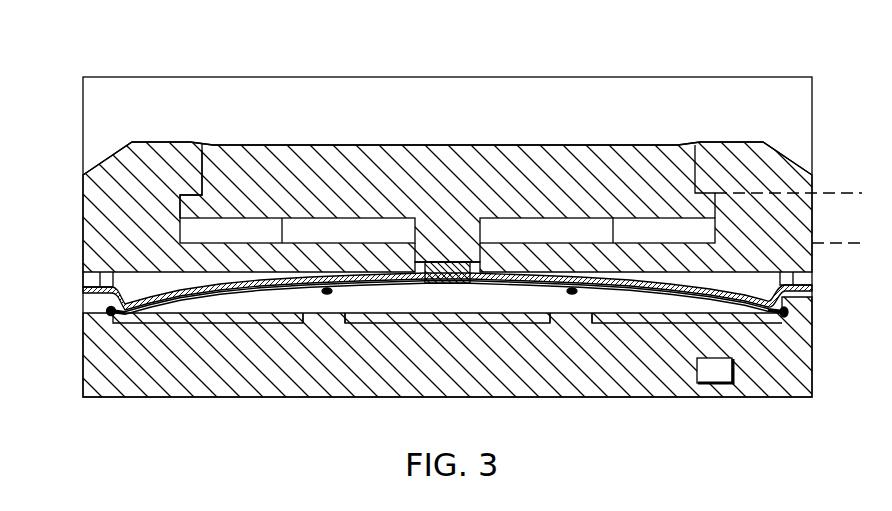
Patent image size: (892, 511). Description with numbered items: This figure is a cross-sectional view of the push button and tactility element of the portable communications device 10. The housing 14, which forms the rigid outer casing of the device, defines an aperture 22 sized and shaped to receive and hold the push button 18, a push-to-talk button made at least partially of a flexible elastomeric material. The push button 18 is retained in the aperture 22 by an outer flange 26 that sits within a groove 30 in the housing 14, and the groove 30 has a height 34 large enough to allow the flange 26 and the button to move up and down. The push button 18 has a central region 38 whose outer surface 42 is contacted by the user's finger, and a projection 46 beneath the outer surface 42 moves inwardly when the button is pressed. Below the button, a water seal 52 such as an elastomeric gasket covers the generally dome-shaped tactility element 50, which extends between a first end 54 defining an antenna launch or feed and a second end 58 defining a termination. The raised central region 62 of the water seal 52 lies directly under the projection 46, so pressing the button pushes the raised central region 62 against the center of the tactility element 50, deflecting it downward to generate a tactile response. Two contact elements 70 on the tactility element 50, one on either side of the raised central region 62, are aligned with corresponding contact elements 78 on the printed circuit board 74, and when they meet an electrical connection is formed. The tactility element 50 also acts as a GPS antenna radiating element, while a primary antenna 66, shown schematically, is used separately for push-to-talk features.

The portable communications device 10 is at (177, 73).
The housing 14 is at (742, 157).
The push button 18 is at (547, 138).
The aperture 22 is at (693, 151).
The outer flange 26 is at (180, 205).
The groove 30 is at (193, 236).
The height 34 is at (839, 290).
The central region 38 is at (452, 163).
The outer surface 42 is at (349, 145).
The projection 46 is at (468, 284).
The tactility element 50 is at (173, 308).
The water seal 52 is at (228, 292).
The first end 54 is at (108, 311).
The second end 58 is at (790, 312).
The raised central region 62 is at (437, 276).
The primary antenna 66 is at (696, 370).
The contact element 70 is at (328, 295).
The printed circuit board 74 is at (800, 350).
The corresponding contact element 78 is at (304, 318).